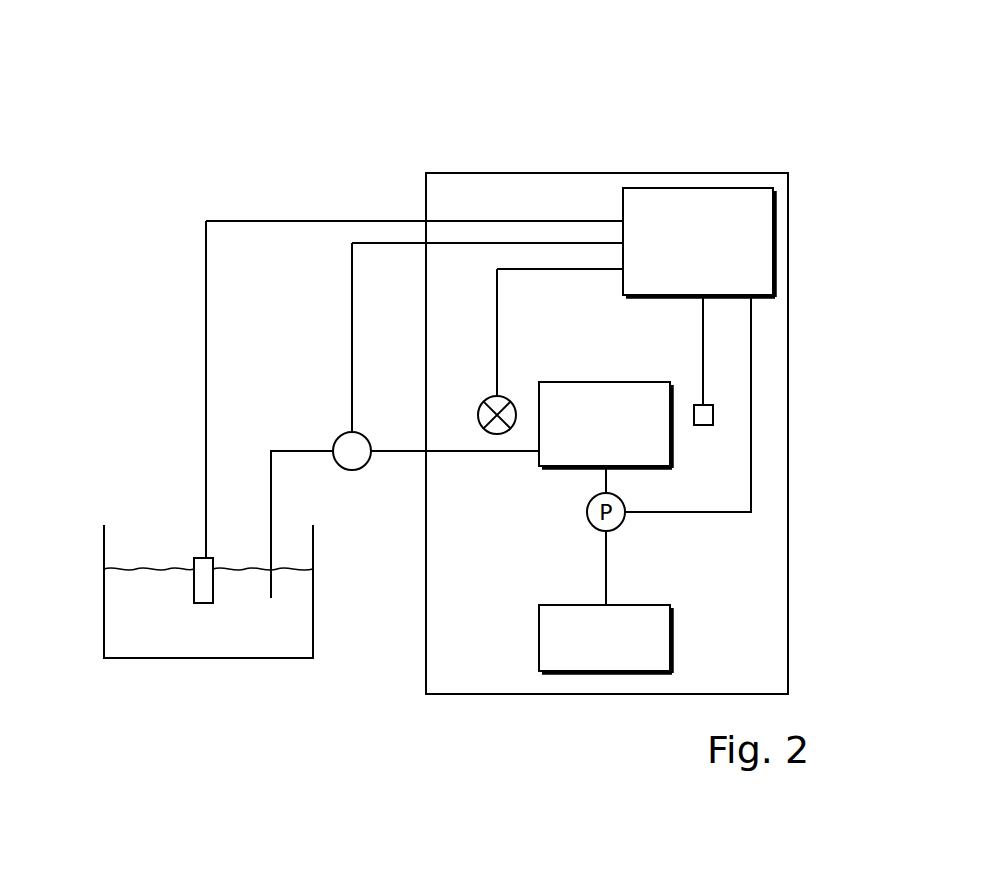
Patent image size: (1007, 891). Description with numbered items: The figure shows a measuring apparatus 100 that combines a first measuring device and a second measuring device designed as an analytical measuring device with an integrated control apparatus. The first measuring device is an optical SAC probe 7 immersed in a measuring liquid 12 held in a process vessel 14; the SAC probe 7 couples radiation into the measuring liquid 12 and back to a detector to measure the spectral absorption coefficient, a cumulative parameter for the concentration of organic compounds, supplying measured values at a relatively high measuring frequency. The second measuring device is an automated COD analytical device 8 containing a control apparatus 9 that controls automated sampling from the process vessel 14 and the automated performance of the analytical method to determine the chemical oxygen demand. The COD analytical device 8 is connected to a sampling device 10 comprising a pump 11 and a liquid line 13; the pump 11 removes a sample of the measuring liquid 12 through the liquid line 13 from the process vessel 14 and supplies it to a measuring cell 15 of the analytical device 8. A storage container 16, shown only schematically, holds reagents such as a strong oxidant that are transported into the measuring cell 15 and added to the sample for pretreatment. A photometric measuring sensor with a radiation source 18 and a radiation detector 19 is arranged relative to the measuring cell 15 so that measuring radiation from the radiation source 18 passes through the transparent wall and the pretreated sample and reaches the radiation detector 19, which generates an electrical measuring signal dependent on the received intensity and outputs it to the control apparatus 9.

The measuring apparatus 100 is at (726, 120).
The COD analytical device 8 is at (788, 512).
The control apparatus 9 is at (699, 242).
The measuring cell 15 is at (605, 425).
The storage container 16 is at (605, 639).
The radiation source 18 is at (481, 407).
The radiation detector 19 is at (713, 415).
The pump 11 is at (363, 461).
The liquid line 13 is at (268, 487).
The process vessel 14 is at (104, 623).
The measuring liquid 12 is at (281, 632).
The optical SAC probe 7 is at (202, 590).
The sampling device 10 is at (380, 598).